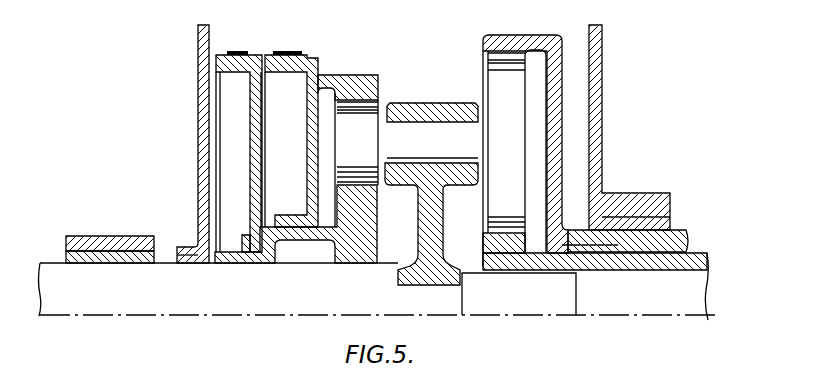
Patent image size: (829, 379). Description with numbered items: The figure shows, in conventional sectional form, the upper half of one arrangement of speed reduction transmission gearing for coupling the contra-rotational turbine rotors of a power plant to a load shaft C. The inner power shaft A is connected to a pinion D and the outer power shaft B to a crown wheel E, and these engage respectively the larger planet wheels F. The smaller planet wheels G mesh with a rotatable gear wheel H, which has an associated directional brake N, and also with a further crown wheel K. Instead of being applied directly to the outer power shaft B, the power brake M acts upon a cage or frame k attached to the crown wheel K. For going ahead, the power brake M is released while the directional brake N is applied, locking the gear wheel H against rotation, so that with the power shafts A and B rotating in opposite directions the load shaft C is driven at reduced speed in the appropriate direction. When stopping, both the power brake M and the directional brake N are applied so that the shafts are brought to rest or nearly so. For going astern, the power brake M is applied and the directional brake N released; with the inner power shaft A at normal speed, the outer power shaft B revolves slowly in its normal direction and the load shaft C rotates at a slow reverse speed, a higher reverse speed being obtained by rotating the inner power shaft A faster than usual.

The inner power shaft A is at (703, 252).
The outer power shaft B is at (678, 238).
The load shaft C is at (502, 305).
The pinion D is at (490, 231).
The crown wheel E is at (483, 62).
The larger planet wheels F is at (515, 137).
The smaller planet wheels G is at (379, 97).
The rotatable gear wheel H is at (372, 190).
The further crown wheel K is at (352, 78).
The cage or frame k is at (308, 150).
The power brake M is at (281, 54).
The directional brake N is at (246, 52).